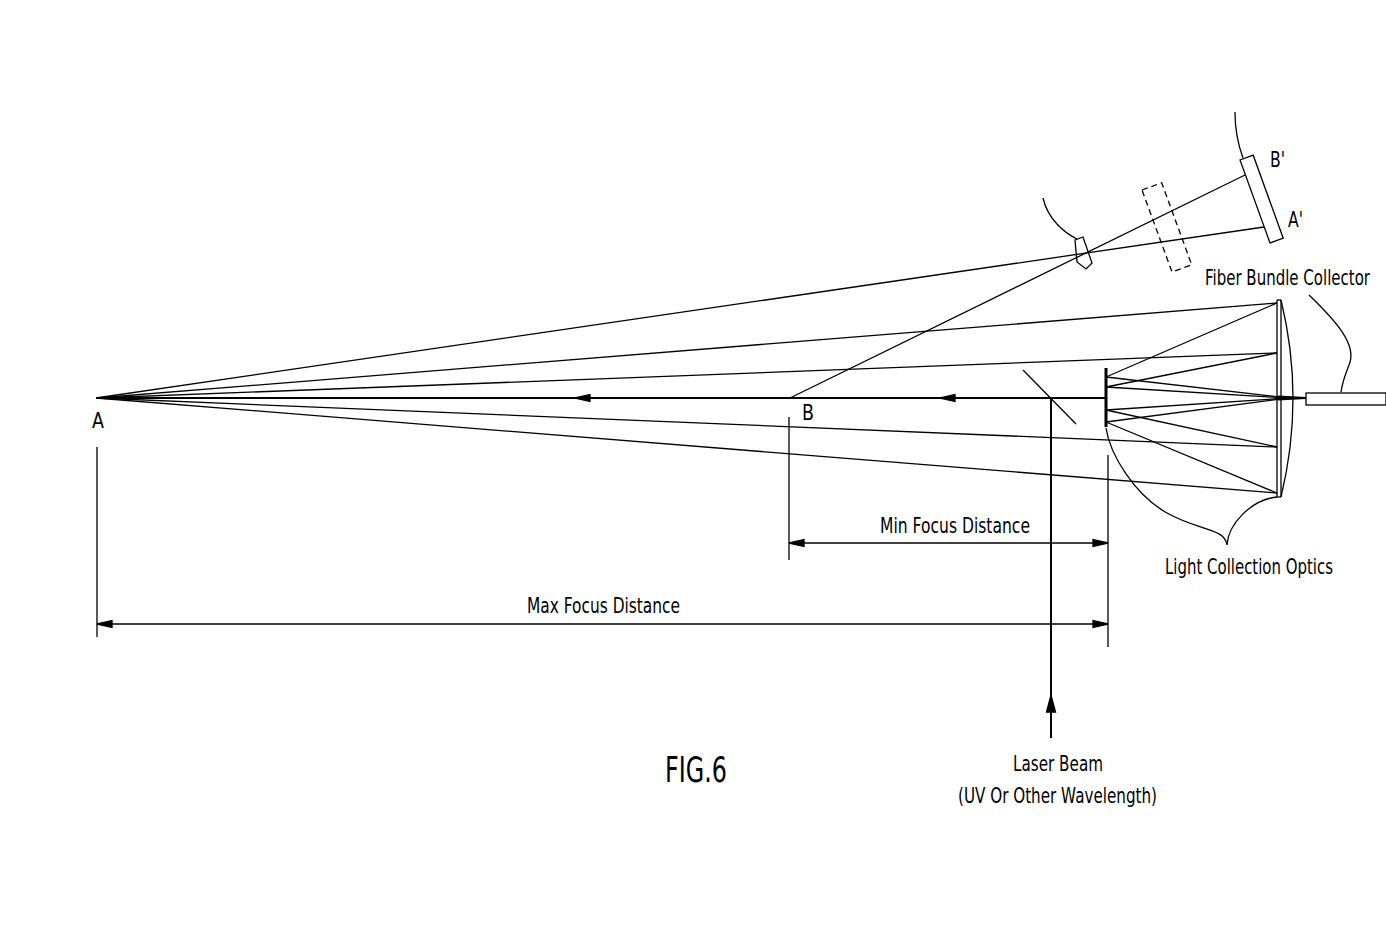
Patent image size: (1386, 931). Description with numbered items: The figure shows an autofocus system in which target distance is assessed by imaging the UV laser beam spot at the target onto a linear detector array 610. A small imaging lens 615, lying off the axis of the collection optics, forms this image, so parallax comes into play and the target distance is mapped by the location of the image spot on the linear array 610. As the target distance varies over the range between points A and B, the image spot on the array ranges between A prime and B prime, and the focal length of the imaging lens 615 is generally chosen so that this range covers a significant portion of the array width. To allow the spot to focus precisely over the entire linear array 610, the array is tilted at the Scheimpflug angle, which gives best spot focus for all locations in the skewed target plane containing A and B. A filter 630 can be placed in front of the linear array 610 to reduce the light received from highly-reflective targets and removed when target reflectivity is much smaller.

The linear detector array 610 is at (1267, 196).
The imaging lens 615 is at (1087, 269).
The filter 630 is at (1163, 183).